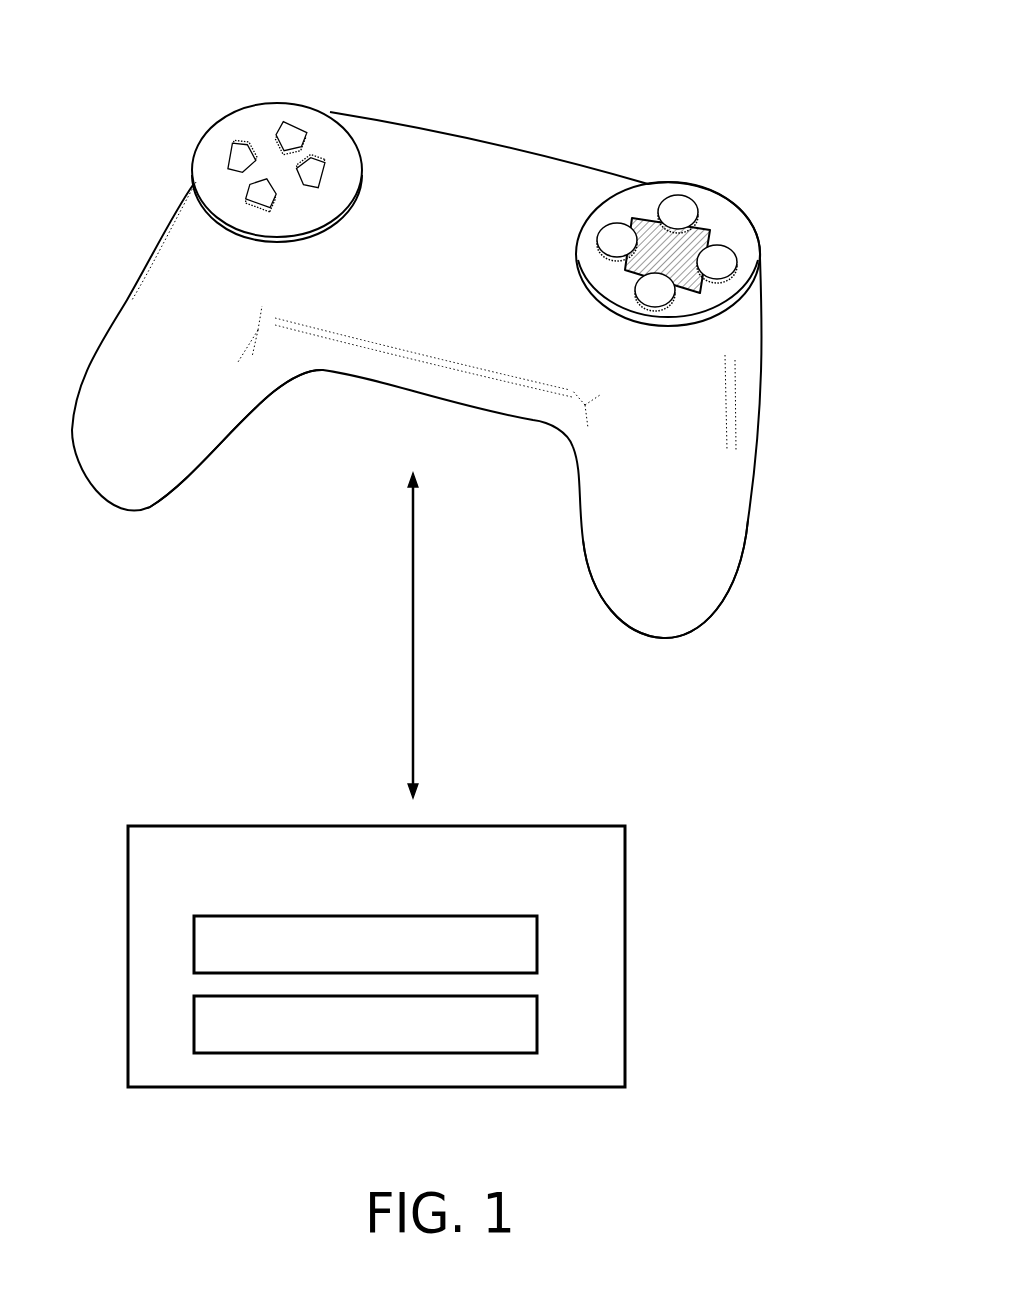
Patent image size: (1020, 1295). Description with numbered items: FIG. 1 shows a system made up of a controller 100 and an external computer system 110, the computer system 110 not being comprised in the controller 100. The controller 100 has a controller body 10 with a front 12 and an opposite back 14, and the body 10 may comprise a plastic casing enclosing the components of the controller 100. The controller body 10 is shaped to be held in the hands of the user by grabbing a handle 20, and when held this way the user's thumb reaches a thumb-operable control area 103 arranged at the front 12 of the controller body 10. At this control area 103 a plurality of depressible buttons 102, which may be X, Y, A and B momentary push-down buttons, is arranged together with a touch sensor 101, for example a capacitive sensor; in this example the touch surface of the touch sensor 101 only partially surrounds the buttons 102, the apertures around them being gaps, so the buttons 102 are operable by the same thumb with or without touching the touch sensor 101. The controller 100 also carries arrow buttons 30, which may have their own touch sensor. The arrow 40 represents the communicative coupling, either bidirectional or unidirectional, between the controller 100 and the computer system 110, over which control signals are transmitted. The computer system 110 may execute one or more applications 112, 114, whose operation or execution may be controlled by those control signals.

The controller body 10 is at (390, 278).
The front 12 is at (447, 195).
The back 14 is at (529, 124).
The handle 20 is at (576, 554).
The arrow buttons 30 is at (265, 150).
The arrow 40 is at (384, 635).
The controller 100 is at (323, 357).
The touch sensor 101 is at (677, 250).
The depressible buttons 102 is at (735, 268).
The thumb-operable control area 103 is at (715, 310).
The computer system 110 is at (376, 956).
The application 112 is at (365, 944).
The application 114 is at (365, 1024).